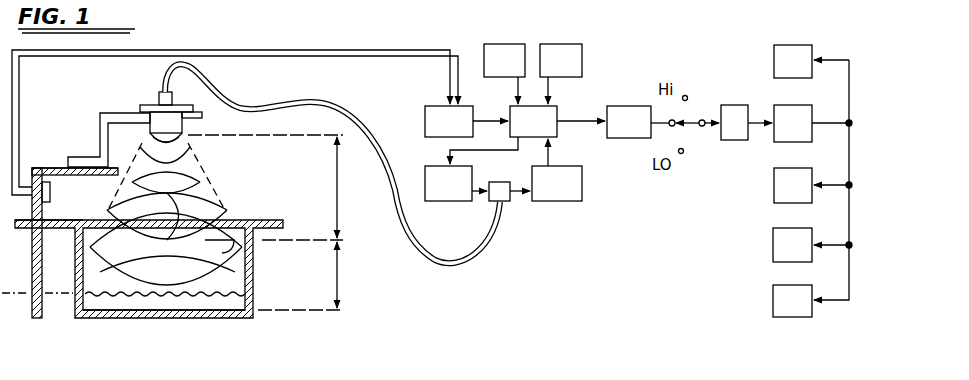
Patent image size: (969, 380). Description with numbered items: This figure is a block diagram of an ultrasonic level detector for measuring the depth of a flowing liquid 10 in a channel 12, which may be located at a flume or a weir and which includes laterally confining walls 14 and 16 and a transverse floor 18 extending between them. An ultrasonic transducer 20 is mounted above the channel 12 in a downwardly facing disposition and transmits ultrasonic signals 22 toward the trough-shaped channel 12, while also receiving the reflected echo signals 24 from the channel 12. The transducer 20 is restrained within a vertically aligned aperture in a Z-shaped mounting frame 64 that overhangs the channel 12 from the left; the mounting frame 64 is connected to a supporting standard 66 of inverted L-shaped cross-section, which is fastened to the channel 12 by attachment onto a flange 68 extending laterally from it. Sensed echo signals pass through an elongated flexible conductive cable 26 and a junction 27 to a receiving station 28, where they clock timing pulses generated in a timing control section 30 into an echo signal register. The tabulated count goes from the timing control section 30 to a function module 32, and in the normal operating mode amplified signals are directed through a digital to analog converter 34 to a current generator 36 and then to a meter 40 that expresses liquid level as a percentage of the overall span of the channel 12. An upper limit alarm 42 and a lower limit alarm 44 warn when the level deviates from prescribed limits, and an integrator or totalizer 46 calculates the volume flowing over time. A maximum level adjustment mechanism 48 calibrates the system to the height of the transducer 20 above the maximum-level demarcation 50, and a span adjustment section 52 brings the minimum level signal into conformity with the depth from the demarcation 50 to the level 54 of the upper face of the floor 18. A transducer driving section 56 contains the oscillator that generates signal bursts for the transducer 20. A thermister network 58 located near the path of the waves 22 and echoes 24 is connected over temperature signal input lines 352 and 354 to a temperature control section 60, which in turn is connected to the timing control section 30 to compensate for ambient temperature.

The flowing liquid 10 is at (147, 310).
The channel 12 is at (268, 259).
The laterally confining wall 14 is at (73, 258).
The laterally confining wall 16 is at (250, 297).
The transverse floor 18 is at (213, 318).
The ultrasonic transducer 20 is at (187, 93).
The ultrasonic signals 22 is at (167, 191).
The reflected ultrasonic echo signals 24 is at (175, 258).
The elongated flexible conductive cable 26 is at (433, 262).
The junction 27 is at (505, 203).
The receiving station 28 is at (557, 183).
The timing control section 30 is at (533, 121).
The function module 32 is at (629, 122).
The digital to analog converter 34 is at (734, 122).
The current generator 36 is at (793, 123).
The meter 40 is at (792, 301).
The upper limit alarm 42 is at (793, 185).
The lower limit alarm 44 is at (792, 245).
The integrator or totalizer 46 is at (793, 61).
The maximum level adjustment mechanism 48 is at (504, 60).
The demarcation 50 is at (339, 240).
The span adjustment section 52 is at (561, 60).
The level 54 is at (330, 312).
The transducer driving section 56 is at (448, 183).
The thermister network 58 is at (50, 192).
The temperature control section 60 is at (449, 121).
The Z-shaped mounting frame 64 is at (117, 112).
The supporting standard 66 is at (40, 167).
The flange 68 is at (45, 220).
The temperature signal input line 352 is at (303, 50).
The temperature signal input line 354 is at (356, 56).